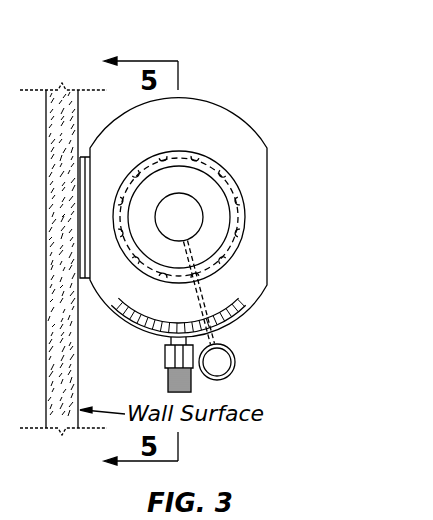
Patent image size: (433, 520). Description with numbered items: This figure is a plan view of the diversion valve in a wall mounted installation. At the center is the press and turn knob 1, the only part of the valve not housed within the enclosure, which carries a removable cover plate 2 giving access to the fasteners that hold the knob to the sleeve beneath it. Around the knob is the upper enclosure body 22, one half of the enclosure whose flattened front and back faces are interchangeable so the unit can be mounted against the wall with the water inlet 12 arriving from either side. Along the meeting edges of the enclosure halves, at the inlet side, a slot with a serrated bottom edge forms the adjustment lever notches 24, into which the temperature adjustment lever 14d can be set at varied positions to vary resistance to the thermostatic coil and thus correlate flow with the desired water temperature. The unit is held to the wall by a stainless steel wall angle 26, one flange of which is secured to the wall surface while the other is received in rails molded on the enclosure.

The press and turn knob 1 is at (190, 190).
The cover plate 2 is at (190, 231).
The upper enclosure body 22 is at (192, 308).
The adjustment lever notches 24 is at (228, 332).
The temperature adjustment lever 14d is at (240, 365).
The water inlet 12 is at (193, 388).
The wall angle 26 is at (84, 281).